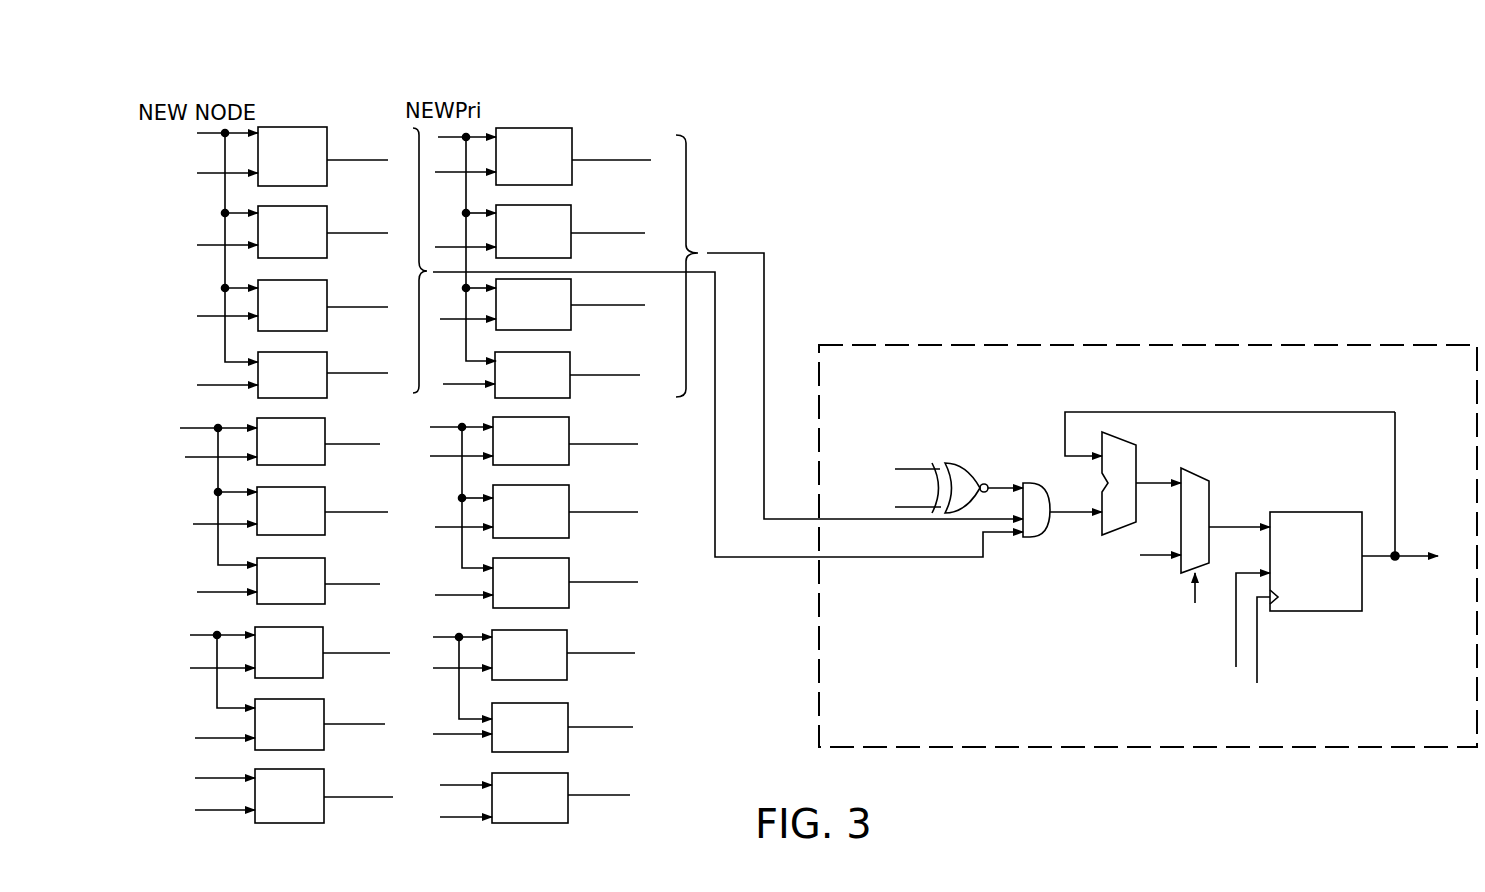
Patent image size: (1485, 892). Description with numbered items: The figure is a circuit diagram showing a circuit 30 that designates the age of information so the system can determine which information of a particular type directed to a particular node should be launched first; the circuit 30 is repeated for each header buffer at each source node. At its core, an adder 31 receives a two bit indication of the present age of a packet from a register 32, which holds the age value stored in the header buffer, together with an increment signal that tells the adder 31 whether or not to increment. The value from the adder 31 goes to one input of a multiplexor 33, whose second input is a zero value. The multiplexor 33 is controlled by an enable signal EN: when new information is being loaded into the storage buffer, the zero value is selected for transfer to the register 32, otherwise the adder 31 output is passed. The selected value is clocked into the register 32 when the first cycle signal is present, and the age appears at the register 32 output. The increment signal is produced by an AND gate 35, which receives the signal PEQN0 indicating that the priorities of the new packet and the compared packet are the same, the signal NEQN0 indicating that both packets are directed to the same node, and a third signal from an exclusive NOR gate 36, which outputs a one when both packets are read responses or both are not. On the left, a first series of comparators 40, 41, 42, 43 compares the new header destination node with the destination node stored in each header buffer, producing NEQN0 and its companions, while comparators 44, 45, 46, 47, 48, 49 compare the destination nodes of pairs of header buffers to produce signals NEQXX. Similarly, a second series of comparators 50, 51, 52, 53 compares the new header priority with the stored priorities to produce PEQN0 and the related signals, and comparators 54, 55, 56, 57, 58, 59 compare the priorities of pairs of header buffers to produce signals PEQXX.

The circuit 30 is at (942, 402).
The adder 31 is at (1170, 457).
The register 32 is at (1337, 547).
The multiplexor 33 is at (1203, 512).
The AND gate 35 is at (1039, 527).
The exclusive NOR gate 36 is at (966, 463).
The comparator 40 is at (287, 157).
The comparator 41 is at (293, 232).
The comparator 42 is at (294, 305).
The comparator 43 is at (294, 374).
The comparator 44 is at (288, 433).
The comparator 45 is at (290, 510).
The comparator 46 is at (294, 580).
The comparator 47 is at (283, 644).
The comparator 48 is at (291, 723).
The comparator 49 is at (294, 787).
The comparator 50 is at (539, 158).
The comparator 51 is at (534, 231).
The comparator 52 is at (535, 304).
The comparator 53 is at (535, 373).
The comparator 54 is at (525, 433).
The comparator 55 is at (527, 511).
The comparator 56 is at (527, 583).
The comparator 57 is at (521, 646).
The comparator 58 is at (521, 728).
The comparator 59 is at (528, 790).